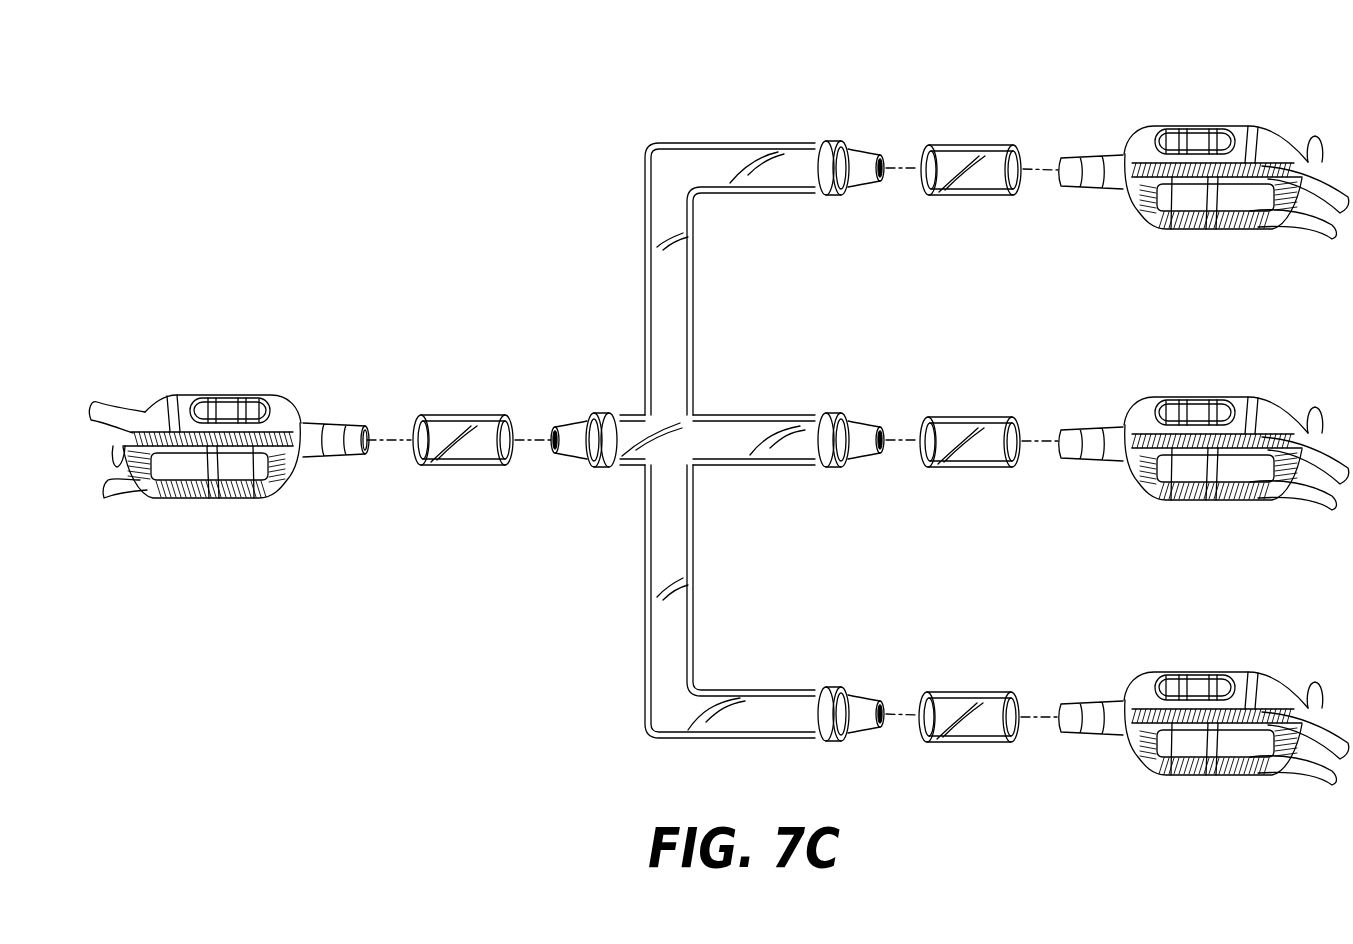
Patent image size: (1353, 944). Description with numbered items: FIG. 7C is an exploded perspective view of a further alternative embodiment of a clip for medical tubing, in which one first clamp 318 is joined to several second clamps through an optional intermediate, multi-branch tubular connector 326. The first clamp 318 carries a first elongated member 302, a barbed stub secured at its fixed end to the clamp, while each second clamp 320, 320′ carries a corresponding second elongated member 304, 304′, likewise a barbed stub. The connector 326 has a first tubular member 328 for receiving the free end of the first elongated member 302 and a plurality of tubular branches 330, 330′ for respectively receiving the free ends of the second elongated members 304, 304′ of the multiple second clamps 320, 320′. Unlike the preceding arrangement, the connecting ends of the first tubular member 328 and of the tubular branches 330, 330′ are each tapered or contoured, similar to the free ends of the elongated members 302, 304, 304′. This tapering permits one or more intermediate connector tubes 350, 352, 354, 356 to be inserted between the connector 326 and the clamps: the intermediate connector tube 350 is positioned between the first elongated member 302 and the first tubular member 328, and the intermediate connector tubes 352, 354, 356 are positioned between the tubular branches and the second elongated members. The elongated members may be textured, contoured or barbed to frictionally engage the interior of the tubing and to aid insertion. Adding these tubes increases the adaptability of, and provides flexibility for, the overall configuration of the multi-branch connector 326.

The first elongated member 302 is at (326, 452).
The second elongated member 304 is at (1094, 461).
The second elongated member 304′ is at (1095, 186).
The first clamp 318 is at (243, 392).
The second clamp 320 is at (1244, 398).
The second clamp 320′ is at (1243, 125).
The intermediate multi-branch tubular connector 326 is at (643, 688).
The first tubular member 328 is at (578, 460).
The tubular branch 330 is at (803, 466).
The tubular branch 330′ is at (805, 194).
The intermediate connector tube 350 is at (458, 416).
The intermediate connector tube 352 is at (960, 418).
The intermediate connector tube 354 is at (960, 146).
The intermediate connector tube 356 is at (957, 692).